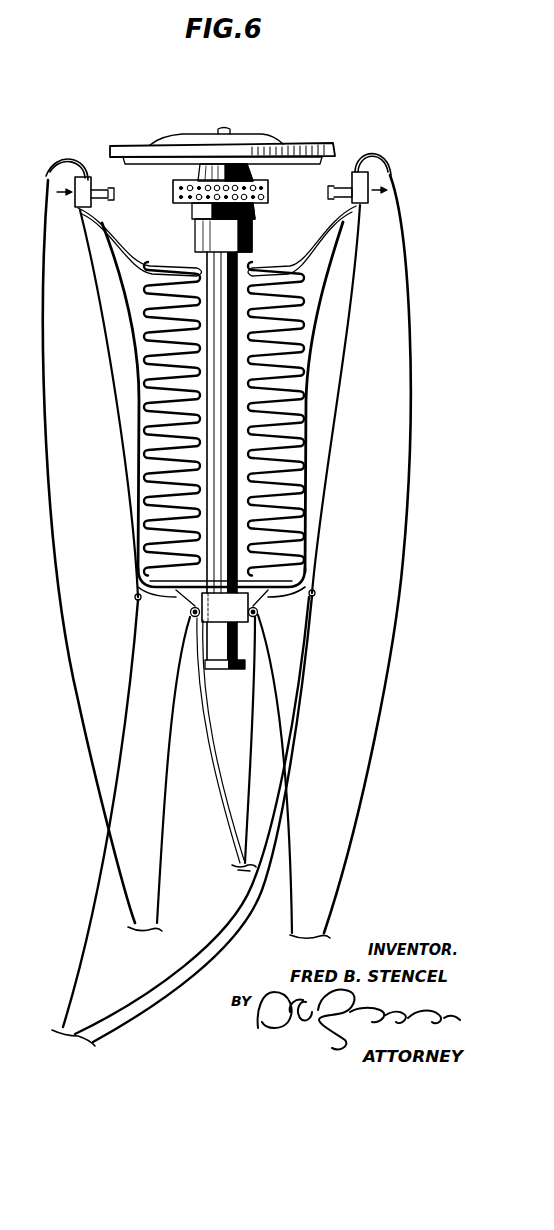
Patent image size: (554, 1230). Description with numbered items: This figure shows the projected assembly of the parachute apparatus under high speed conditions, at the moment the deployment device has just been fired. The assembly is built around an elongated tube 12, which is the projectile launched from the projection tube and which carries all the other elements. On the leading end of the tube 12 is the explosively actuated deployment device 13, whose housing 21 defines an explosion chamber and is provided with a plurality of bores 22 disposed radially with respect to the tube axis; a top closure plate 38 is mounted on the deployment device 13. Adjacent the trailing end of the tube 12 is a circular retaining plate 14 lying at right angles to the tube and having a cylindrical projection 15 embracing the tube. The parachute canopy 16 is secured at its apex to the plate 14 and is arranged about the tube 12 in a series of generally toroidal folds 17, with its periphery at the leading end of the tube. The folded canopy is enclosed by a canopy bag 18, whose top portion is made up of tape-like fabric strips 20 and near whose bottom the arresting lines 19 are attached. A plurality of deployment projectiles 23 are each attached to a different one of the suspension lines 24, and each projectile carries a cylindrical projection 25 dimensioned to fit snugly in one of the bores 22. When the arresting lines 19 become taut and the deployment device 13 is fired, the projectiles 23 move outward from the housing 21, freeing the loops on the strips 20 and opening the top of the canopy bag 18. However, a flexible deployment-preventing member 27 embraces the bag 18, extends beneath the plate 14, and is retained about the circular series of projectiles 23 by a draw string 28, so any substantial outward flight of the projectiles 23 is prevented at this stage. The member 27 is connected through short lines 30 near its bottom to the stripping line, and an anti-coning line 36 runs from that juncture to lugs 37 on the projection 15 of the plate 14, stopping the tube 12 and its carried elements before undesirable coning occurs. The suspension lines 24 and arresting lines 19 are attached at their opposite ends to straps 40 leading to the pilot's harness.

The elongated tube 12 is at (238, 267).
The explosively actuated deployment device 13 is at (256, 172).
The circular retaining plate 14 is at (267, 592).
The cylindrical projection 15 is at (245, 627).
The parachute canopy 16 is at (314, 318).
The toroidal folds 17 is at (293, 348).
The canopy bag 18 is at (300, 428).
The arresting lines 19 is at (277, 697).
The tape-like fabric strips 20 is at (322, 278).
The housing 21 is at (263, 208).
The bores 22 is at (220, 193).
The deployment projectiles 23 is at (76, 201).
The suspension lines 24 is at (43, 257).
The cylindrical projection 25 is at (98, 199).
The deployment-preventing member 27 is at (360, 220).
The draw string 28 is at (363, 168).
The short lines 30 is at (100, 882).
The anti-coning line 36 is at (145, 997).
The lug 37 is at (190, 612).
The top closure plate 38 is at (337, 147).
The straps 40 is at (8, 805).